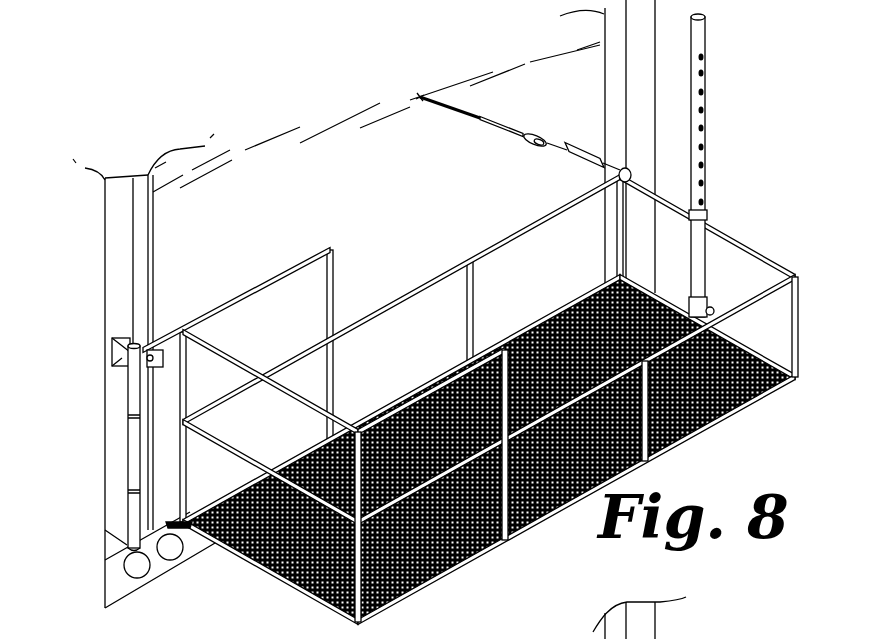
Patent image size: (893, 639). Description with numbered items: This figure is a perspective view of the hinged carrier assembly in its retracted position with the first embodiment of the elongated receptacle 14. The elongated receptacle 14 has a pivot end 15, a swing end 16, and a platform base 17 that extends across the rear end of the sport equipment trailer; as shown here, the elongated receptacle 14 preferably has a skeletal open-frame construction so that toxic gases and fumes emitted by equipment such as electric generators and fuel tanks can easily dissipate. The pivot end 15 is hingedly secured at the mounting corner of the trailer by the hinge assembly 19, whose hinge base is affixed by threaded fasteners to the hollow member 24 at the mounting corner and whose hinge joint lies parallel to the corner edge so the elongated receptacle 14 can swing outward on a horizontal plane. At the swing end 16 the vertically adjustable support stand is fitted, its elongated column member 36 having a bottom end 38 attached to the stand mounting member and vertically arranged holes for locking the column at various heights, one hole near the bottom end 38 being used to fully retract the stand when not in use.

The elongated receptacle 14 is at (562, 514).
The pivot end 15 is at (268, 572).
The swing end 16 is at (728, 240).
The platform base 17 is at (442, 540).
The hinge assembly 19 is at (96, 411).
The support post 24 is at (120, 262).
The elongated column member 36 is at (456, 110).
The bottom end 38 is at (600, 166).